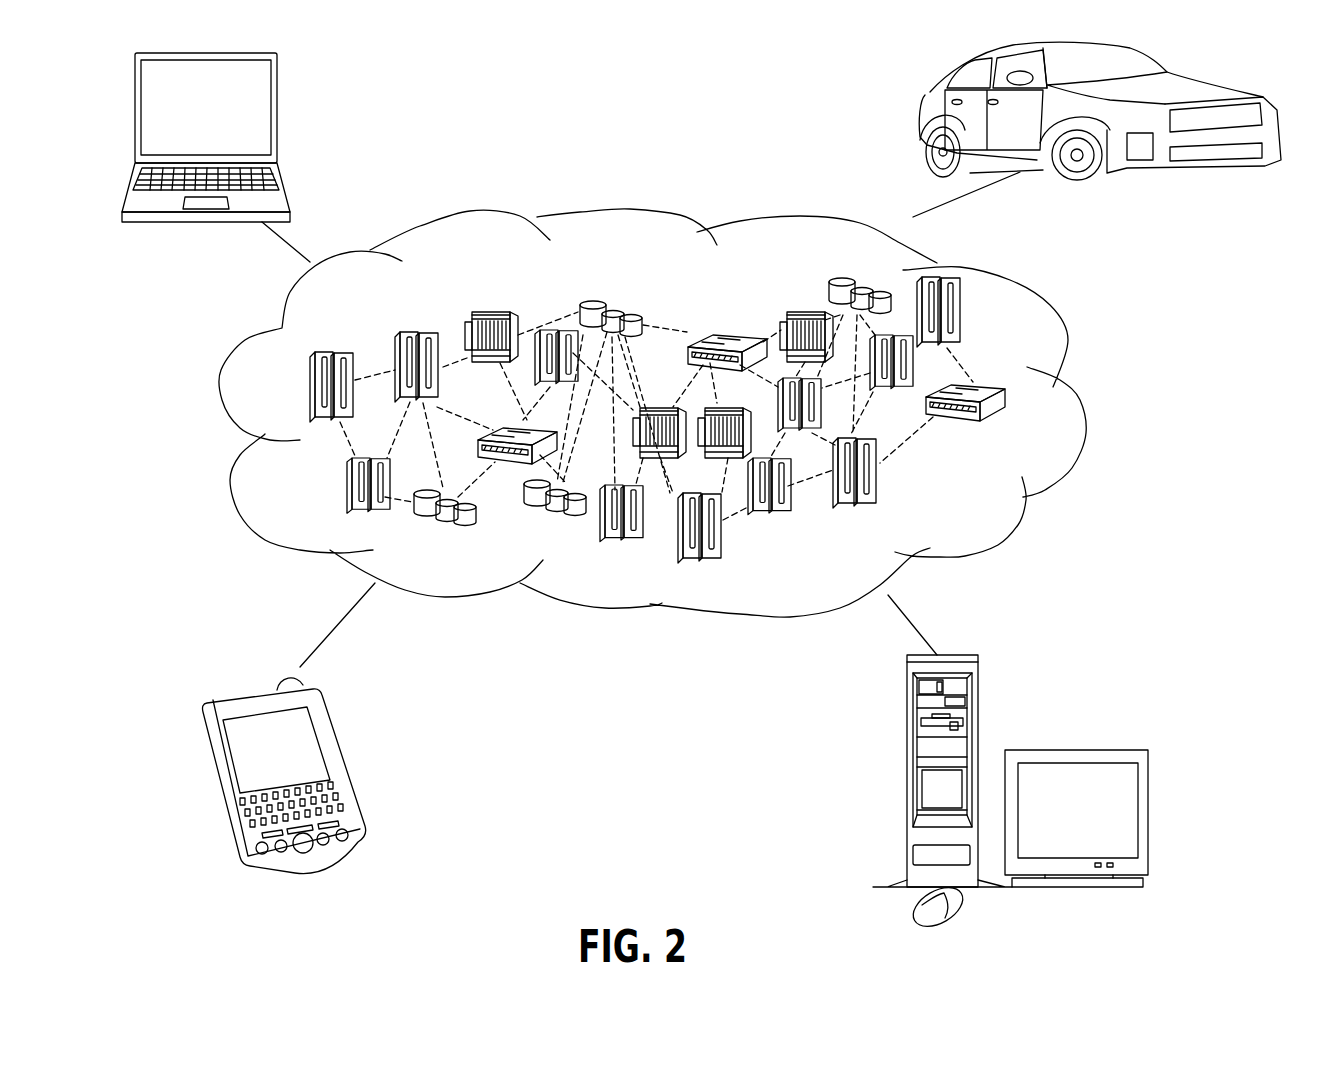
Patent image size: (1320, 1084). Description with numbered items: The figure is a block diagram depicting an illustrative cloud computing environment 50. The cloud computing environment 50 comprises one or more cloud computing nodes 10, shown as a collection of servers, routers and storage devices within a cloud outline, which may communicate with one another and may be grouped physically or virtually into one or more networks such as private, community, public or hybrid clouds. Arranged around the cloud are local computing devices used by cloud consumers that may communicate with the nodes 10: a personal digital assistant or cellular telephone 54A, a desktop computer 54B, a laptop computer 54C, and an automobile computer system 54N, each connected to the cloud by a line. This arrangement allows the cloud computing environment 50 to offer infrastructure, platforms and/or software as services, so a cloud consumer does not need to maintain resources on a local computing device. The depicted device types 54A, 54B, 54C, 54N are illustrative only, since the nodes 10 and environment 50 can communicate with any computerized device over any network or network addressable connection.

The cloud computing environment 50 is at (1073, 402).
The cloud computing nodes 10 is at (985, 505).
The personal digital assistant (PDA) or cellular telephone 54A is at (333, 730).
The desktop computer 54B is at (903, 717).
The laptop computer 54C is at (277, 93).
The automobile computer system 54N is at (923, 110).